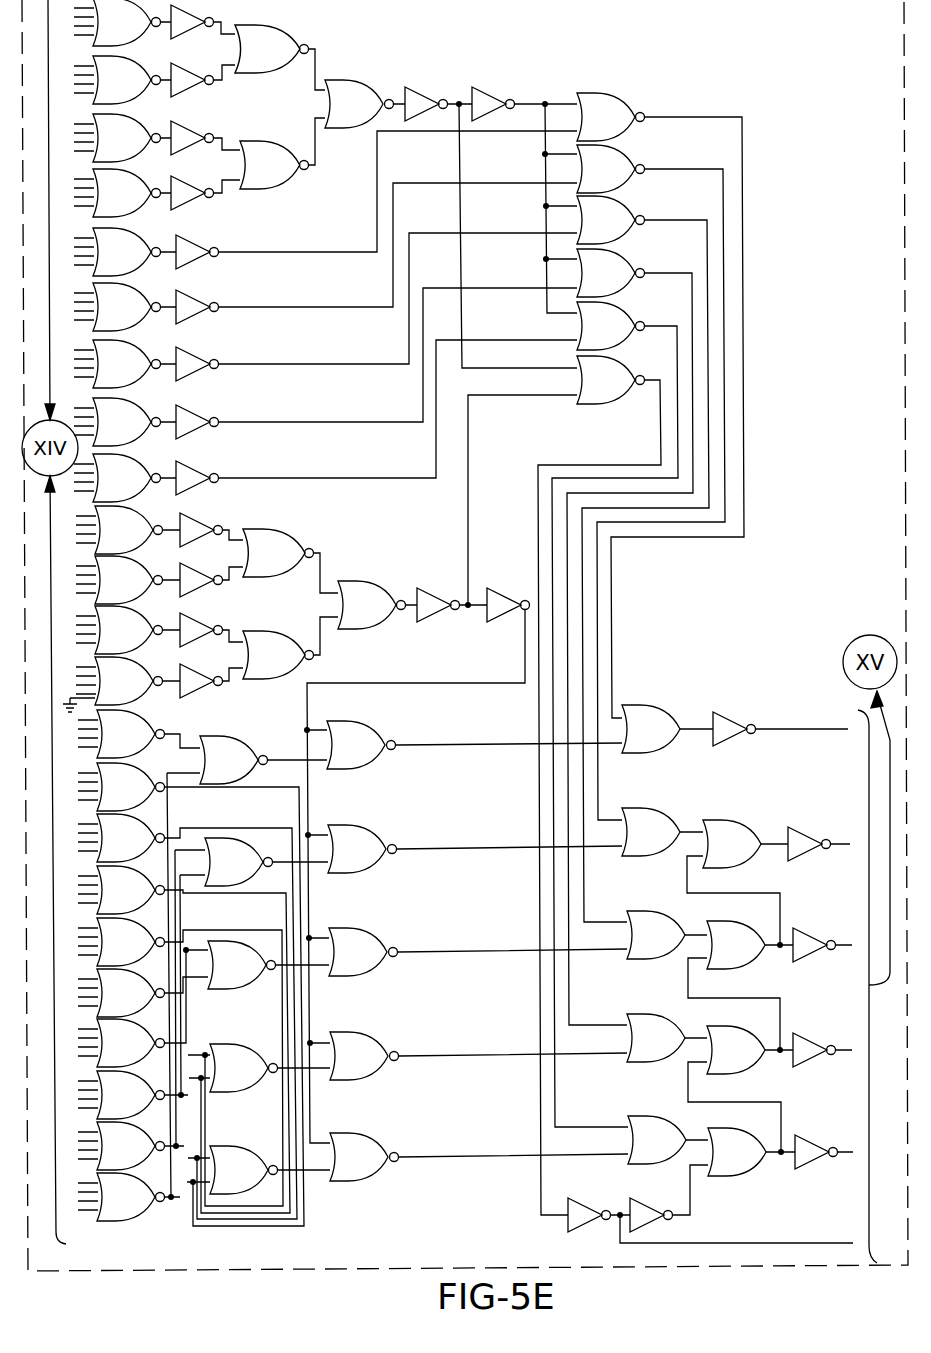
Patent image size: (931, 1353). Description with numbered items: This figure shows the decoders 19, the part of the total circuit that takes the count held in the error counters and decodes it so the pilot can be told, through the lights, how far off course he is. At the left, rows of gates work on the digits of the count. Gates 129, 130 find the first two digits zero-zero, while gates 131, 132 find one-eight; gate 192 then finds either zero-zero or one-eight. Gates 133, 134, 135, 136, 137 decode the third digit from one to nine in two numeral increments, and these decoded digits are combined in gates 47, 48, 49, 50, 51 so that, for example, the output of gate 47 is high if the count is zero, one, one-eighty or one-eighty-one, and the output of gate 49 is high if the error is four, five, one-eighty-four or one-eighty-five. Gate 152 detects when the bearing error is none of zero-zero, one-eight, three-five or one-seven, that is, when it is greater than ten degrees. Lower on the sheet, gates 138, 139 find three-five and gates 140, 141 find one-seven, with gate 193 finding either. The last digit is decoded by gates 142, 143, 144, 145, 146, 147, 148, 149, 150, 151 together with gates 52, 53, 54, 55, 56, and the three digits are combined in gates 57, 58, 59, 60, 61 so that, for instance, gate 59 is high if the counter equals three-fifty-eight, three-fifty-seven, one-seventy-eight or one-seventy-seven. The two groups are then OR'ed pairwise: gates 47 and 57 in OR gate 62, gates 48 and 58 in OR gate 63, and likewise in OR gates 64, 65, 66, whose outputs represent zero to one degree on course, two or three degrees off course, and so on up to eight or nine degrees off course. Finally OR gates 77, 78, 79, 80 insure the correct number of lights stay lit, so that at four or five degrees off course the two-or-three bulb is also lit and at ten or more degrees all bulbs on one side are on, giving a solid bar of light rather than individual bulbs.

The decoders 19 is at (777, 1268).
The gate 47 is at (611, 117).
The gate 48 is at (611, 169).
The gate 49 is at (611, 220).
The gate 50 is at (611, 273).
The gate 51 is at (611, 326).
The gate 152 is at (611, 380).
The gate 52 is at (234, 760).
The gate 53 is at (239, 862).
The gate 54 is at (242, 965).
The gate 55 is at (244, 1068).
The gate 56 is at (244, 1170).
The gate 57 is at (361, 745).
The gate 58 is at (362, 849).
The gate 59 is at (363, 952).
The gate 60 is at (364, 1056).
The gate 61 is at (364, 1157).
The OR gate 62 is at (651, 729).
The OR gate 63 is at (651, 832).
The OR gate 64 is at (656, 935).
The OR gate 65 is at (656, 1038).
The OR gate 66 is at (657, 1140).
The OR gate 77 is at (732, 844).
The OR gate 78 is at (736, 945).
The OR gate 79 is at (736, 1050).
The OR gate 80 is at (737, 1152).
The gate 129 is at (127, 23).
The gate 130 is at (127, 80).
The gate 131 is at (127, 138).
The gate 132 is at (127, 193).
The gate 133 is at (127, 252).
The gate 134 is at (127, 307).
The gate 135 is at (127, 364).
The gate 136 is at (127, 422).
The gate 137 is at (127, 478).
The gate 138 is at (129, 530).
The gate 139 is at (129, 580).
The gate 140 is at (129, 630).
The gate 141 is at (129, 681).
The gate 142 is at (131, 734).
The gate 143 is at (131, 787).
The gate 144 is at (131, 838).
The gate 145 is at (131, 890).
The gate 146 is at (131, 942).
The gate 147 is at (131, 993).
The gate 148 is at (131, 1043).
The gate 149 is at (131, 1095).
The gate 150 is at (131, 1146).
The gate 151 is at (131, 1197).
The gate 192 is at (359, 104).
The gate 193 is at (372, 605).